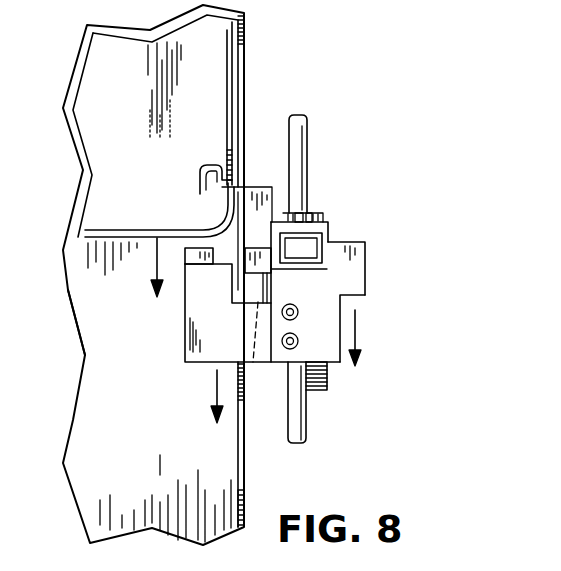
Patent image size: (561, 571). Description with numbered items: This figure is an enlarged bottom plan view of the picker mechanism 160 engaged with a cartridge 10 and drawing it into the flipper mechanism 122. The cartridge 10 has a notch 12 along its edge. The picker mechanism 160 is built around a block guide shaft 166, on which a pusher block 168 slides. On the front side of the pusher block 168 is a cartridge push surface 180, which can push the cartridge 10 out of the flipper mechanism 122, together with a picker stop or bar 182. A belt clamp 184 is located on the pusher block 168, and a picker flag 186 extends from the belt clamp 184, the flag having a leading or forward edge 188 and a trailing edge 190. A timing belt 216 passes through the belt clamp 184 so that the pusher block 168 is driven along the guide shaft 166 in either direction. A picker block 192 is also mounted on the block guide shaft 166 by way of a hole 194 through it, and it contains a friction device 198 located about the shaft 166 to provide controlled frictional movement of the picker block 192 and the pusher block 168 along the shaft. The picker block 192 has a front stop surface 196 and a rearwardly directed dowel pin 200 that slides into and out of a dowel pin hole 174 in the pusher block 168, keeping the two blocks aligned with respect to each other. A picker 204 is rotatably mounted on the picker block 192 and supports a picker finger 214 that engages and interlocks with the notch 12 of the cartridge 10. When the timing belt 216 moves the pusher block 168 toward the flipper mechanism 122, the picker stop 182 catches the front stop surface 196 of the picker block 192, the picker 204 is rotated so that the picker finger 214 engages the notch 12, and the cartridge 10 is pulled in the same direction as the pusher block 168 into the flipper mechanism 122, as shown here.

The cartridge 10 is at (139, 117).
The notch 12 is at (202, 165).
The flipper mechanism 122 is at (70, 390).
The picker mechanism 160 is at (180, 342).
The block guide shaft 166 is at (303, 133).
The pusher block 168 is at (197, 302).
The dowel pin hole 174 is at (243, 386).
The cartridge push surface 180 is at (197, 248).
The picker stop 182 is at (328, 222).
The belt clamp 184 is at (332, 352).
The picker flag 186 is at (358, 277).
The leading edge 188 is at (350, 243).
The trailing edge 190 is at (360, 300).
The picker block 192 is at (287, 227).
The hole 194 is at (368, 182).
The front stop surface 196 is at (298, 218).
The friction device 198 is at (303, 240).
The dowel pin 200 is at (262, 291).
The picker 204 is at (255, 213).
The picker finger 214 is at (223, 185).
The timing belt 216 is at (318, 393).